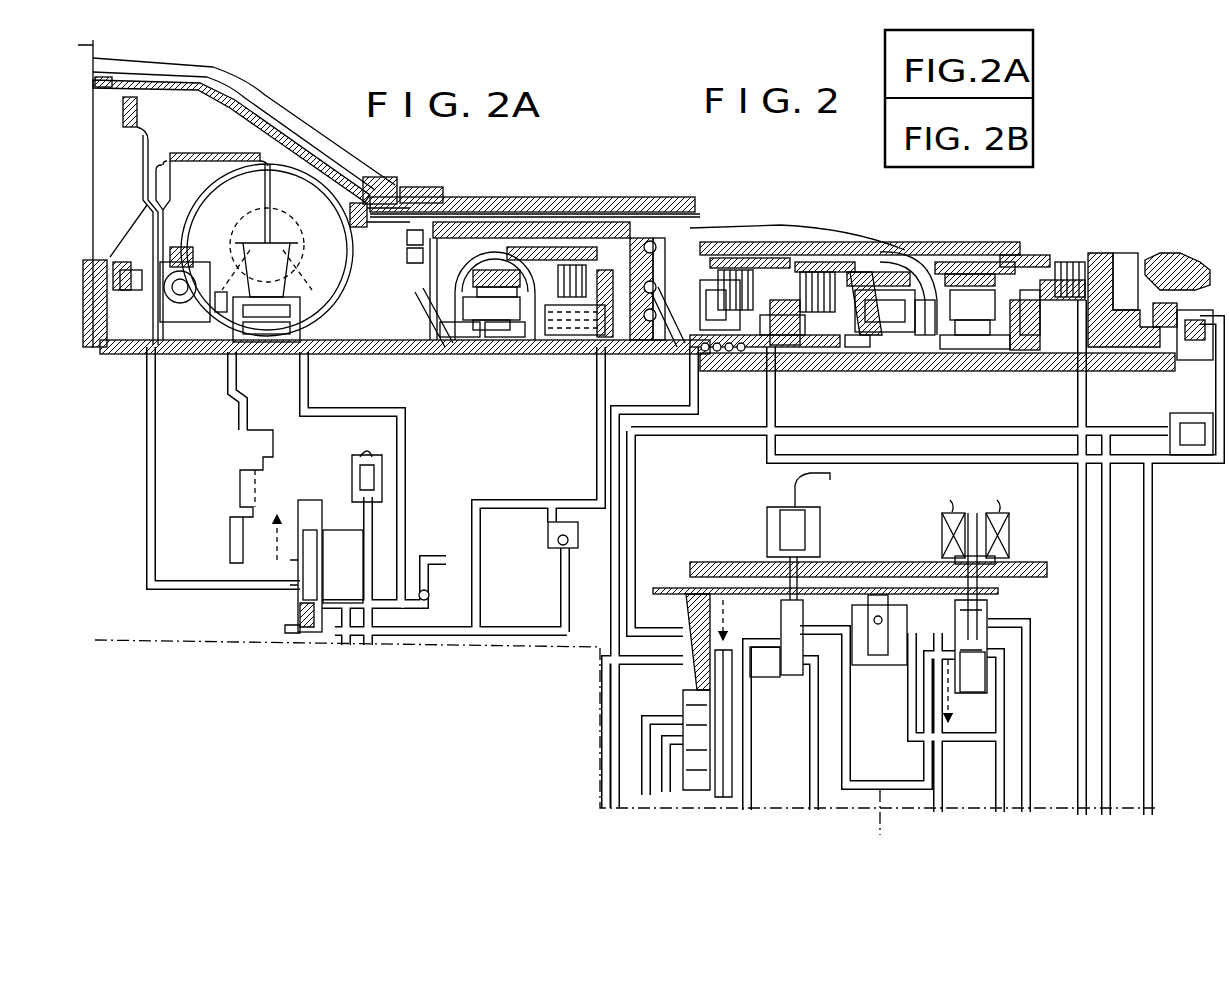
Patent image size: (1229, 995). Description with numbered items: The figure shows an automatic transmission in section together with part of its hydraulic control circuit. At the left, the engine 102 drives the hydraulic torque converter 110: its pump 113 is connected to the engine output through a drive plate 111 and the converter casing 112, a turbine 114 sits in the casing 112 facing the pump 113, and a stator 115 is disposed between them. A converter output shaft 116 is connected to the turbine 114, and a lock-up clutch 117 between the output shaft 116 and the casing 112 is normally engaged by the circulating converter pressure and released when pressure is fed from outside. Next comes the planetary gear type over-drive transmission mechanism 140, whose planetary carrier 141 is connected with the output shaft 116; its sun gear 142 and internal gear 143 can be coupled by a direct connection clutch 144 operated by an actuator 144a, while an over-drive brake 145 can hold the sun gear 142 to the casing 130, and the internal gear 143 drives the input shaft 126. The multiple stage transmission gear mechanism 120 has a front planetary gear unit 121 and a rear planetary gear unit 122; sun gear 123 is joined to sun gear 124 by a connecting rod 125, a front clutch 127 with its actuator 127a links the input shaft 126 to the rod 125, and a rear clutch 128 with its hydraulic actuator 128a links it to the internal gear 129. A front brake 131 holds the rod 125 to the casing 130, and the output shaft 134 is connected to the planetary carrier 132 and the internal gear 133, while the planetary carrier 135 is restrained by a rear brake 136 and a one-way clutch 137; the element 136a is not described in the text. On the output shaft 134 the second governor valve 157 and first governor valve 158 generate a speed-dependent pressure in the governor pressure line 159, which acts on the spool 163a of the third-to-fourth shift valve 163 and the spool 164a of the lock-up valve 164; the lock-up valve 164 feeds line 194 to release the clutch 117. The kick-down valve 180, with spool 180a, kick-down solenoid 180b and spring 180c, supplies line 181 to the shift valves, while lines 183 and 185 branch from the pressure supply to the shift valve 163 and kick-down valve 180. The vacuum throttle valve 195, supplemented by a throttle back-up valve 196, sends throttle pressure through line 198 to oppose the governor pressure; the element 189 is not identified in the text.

The engine 102 is at (98, 55).
The hydraulic torque converter 110 is at (274, 138).
The drive plate 111 is at (150, 140).
The converter casing 112 is at (238, 160).
The pump 113 is at (307, 197).
The turbine 114 is at (217, 193).
The stator 115 is at (272, 272).
The converter output shaft 116 is at (198, 355).
The lock-up clutch 117 is at (146, 217).
The multiple stage transmission gear mechanism 120 is at (914, 262).
The front planetary gear unit 121 is at (785, 300).
The rear planetary gear unit 122 is at (988, 272).
The sun gear 123 is at (897, 350).
The sun gear 124 is at (962, 352).
The connecting rod 125 is at (927, 348).
The input shaft 126 is at (745, 360).
The front clutch 127 is at (720, 262).
The actuator 127a is at (660, 354).
The rear clutch 128 is at (803, 277).
The hydraulic actuator 128a is at (790, 362).
The internal gear 129 is at (880, 278).
The casing 130 is at (740, 255).
The front brake 131 is at (722, 268).
The planetary carrier 132 is at (855, 350).
The internal gear 133 is at (1075, 252).
The output shaft 134 is at (1028, 355).
The planetary carrier 135 is at (953, 262).
The rear brake 136 is at (1117, 263).
The end cover boss 136a is at (1133, 268).
The one-way clutch 137 is at (1032, 334).
The planetary gear type over-drive transmission mechanism 140 is at (450, 250).
The planetary carrier 141 is at (510, 350).
The sun gear 142 is at (487, 342).
The internal gear 143 is at (490, 273).
The direct connection clutch 144 is at (563, 270).
The actuator 144a is at (608, 270).
The over-drive brake 145 is at (513, 247).
The second governor valve 157 is at (1203, 293).
The first governor valve 158 is at (1187, 423).
The governor pressure line 159 is at (1102, 434).
The 3-4 shift valve 163 is at (668, 592).
The spool 163a is at (660, 660).
The lock-up valve 164 is at (292, 596).
The spool 164a is at (300, 622).
The kick-down valve 180 is at (1004, 590).
The spool 180a is at (984, 628).
The kick-down solenoid 180b is at (940, 532).
The spring 180c is at (987, 690).
The line 181 is at (933, 755).
The line 183 is at (727, 766).
The line 185 is at (1000, 798).
The check valve 189 is at (557, 603).
The line 194 is at (166, 482).
The vacuum throttle valve 195 is at (812, 608).
The throttle back-up valve 196 is at (879, 668).
The line 198 is at (747, 718).